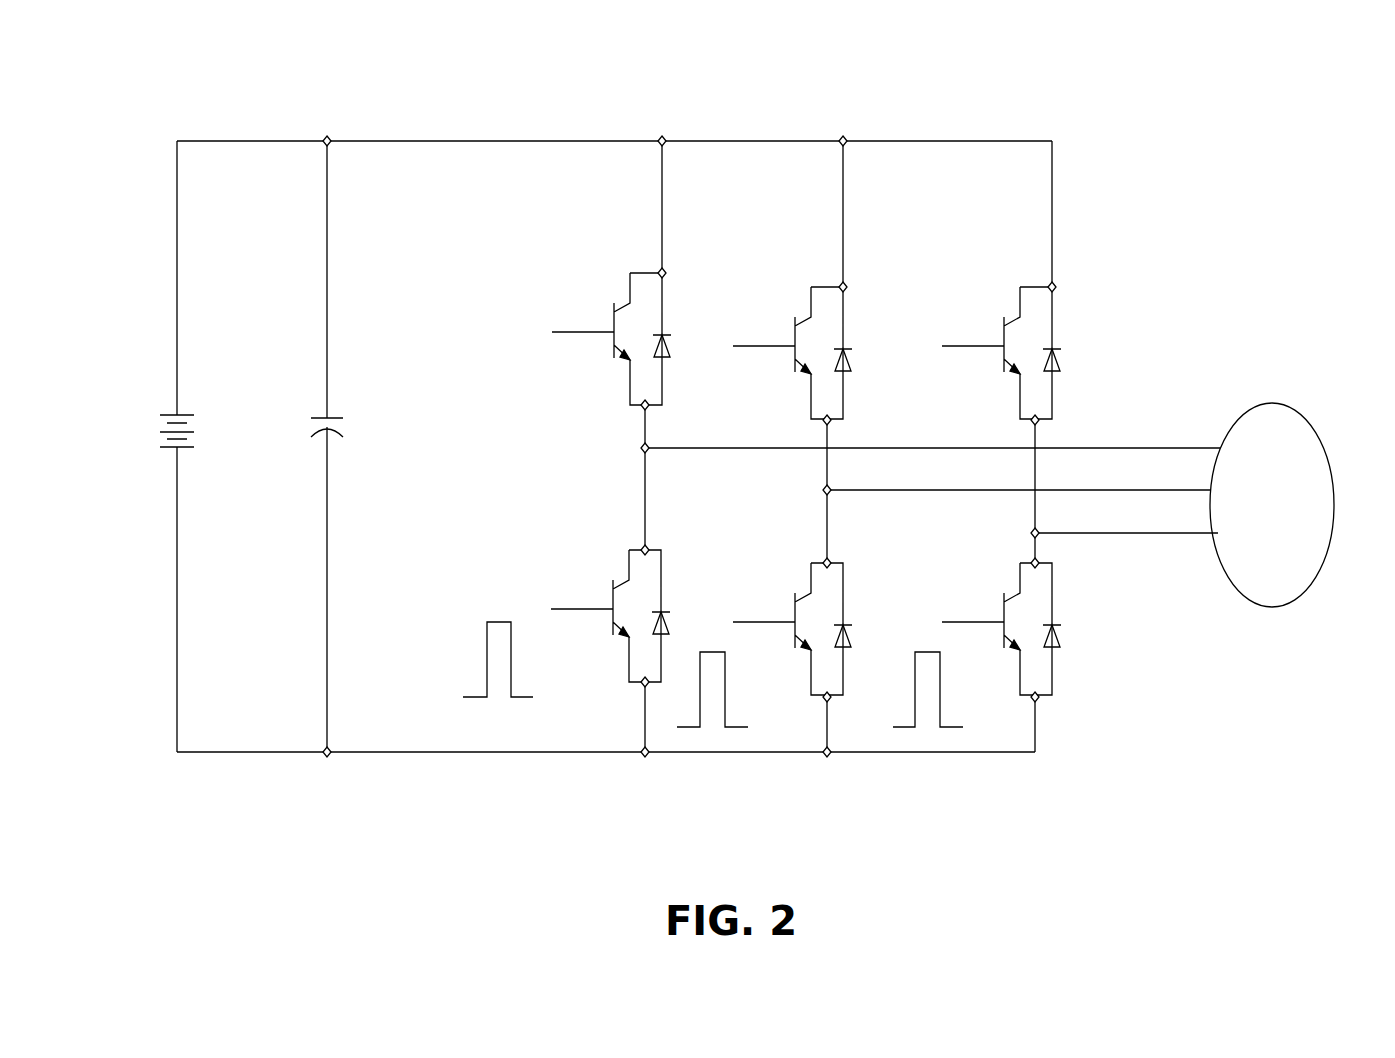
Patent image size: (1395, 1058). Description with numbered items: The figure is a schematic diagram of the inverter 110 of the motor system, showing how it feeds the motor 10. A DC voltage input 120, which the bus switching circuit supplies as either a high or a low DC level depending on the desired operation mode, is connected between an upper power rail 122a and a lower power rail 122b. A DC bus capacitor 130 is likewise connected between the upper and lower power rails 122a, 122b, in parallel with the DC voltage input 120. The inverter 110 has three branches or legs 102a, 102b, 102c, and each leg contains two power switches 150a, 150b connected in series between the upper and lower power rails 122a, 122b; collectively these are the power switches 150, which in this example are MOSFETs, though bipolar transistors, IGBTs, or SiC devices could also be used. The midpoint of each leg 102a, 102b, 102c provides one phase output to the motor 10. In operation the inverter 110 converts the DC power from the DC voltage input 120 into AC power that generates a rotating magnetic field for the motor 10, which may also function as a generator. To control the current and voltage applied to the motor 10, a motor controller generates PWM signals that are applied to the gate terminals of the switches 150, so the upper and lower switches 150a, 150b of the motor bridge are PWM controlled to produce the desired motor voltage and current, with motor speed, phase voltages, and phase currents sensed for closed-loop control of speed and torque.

The motor 10 is at (1278, 402).
The inverter 110 is at (1124, 214).
The DC voltage input 120 is at (171, 398).
The upper power rail 122a is at (418, 141).
The lower power rail 122b is at (389, 753).
The DC bus capacitor 130 is at (318, 408).
The first inverter leg 102a is at (661, 120).
The second inverter leg 102b is at (838, 118).
The third inverter leg 102c is at (1035, 112).
The power switches 150 is at (1105, 351).
The upper power switch 150a is at (642, 268).
The lower power switch 150b is at (622, 567).